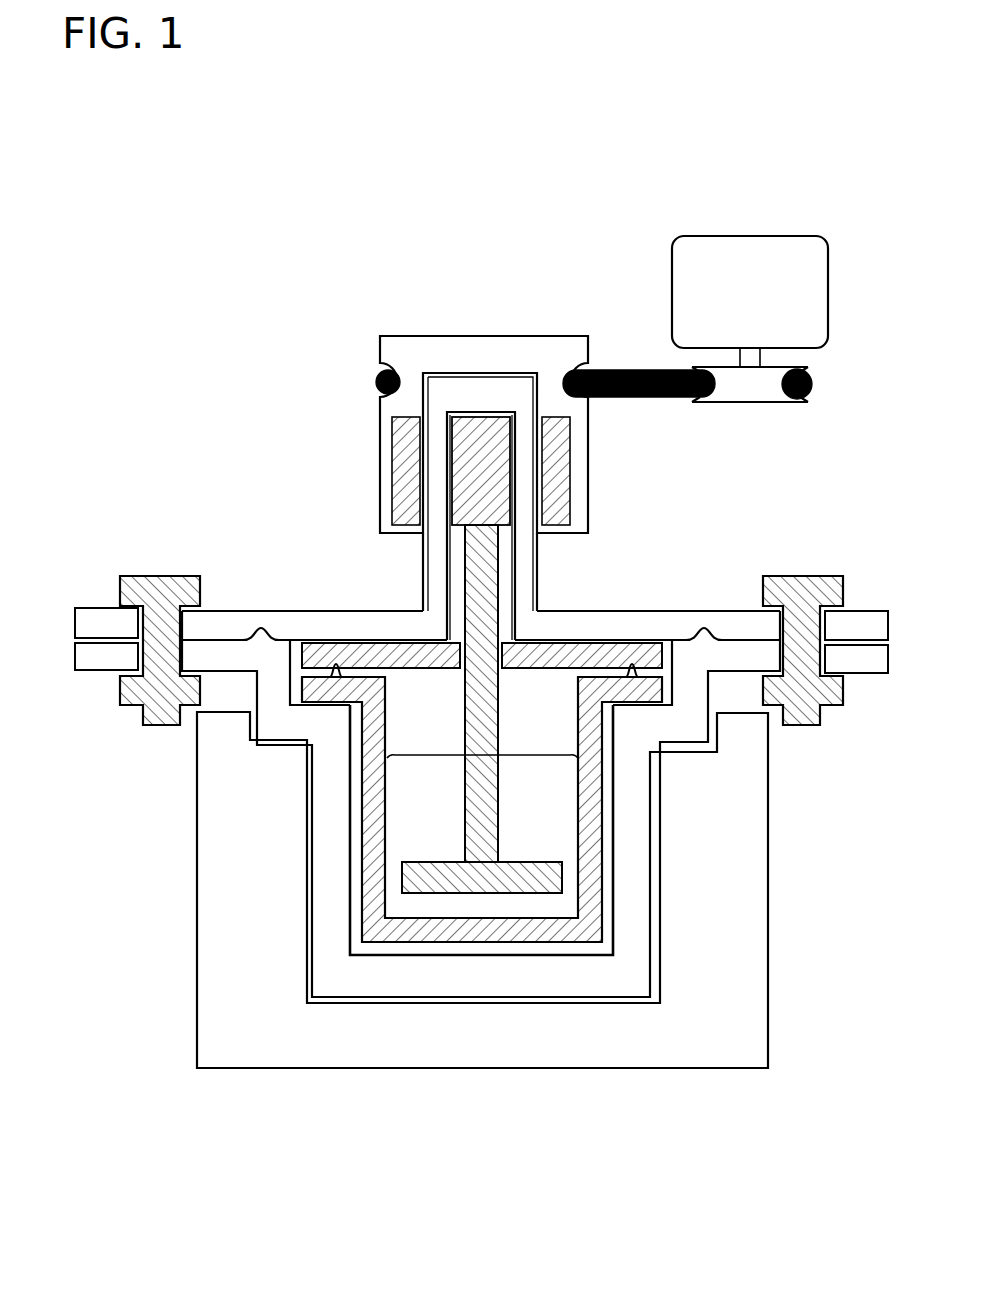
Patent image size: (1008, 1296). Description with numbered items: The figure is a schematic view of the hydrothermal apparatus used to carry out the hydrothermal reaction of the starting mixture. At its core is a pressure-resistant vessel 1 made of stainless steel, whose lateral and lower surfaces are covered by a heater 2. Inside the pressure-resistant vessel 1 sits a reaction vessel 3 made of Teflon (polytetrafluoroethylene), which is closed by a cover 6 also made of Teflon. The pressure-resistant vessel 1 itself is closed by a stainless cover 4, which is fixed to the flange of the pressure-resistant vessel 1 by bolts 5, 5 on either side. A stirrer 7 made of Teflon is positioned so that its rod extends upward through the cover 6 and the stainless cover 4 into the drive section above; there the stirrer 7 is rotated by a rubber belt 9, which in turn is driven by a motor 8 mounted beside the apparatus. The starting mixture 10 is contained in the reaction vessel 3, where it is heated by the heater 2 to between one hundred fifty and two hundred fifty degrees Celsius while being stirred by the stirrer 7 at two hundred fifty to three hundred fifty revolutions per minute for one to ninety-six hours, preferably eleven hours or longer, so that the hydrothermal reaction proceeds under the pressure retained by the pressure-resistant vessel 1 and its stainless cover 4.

The pressure-resistant vessel 1 is at (572, 980).
The heater 2 is at (735, 877).
The reaction vessel 3 is at (465, 928).
The stainless cover 4 is at (590, 622).
The bolts 5 is at (155, 592).
The cover 6 is at (315, 655).
The stirrer 7 is at (486, 618).
The motor 8 is at (798, 292).
The rubber belt 9 is at (383, 393).
The starting mixture 10 is at (444, 826).